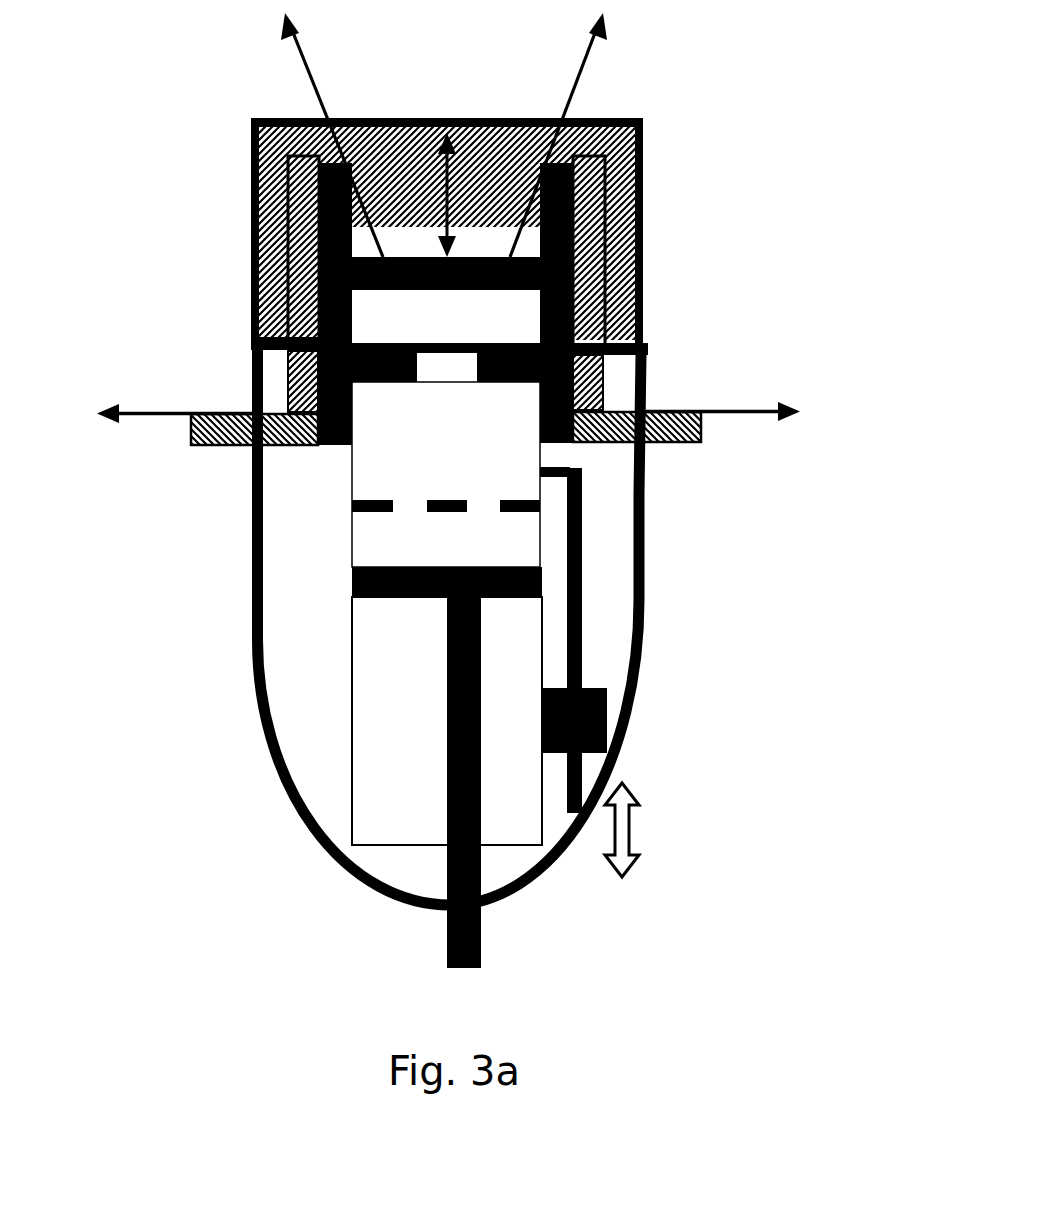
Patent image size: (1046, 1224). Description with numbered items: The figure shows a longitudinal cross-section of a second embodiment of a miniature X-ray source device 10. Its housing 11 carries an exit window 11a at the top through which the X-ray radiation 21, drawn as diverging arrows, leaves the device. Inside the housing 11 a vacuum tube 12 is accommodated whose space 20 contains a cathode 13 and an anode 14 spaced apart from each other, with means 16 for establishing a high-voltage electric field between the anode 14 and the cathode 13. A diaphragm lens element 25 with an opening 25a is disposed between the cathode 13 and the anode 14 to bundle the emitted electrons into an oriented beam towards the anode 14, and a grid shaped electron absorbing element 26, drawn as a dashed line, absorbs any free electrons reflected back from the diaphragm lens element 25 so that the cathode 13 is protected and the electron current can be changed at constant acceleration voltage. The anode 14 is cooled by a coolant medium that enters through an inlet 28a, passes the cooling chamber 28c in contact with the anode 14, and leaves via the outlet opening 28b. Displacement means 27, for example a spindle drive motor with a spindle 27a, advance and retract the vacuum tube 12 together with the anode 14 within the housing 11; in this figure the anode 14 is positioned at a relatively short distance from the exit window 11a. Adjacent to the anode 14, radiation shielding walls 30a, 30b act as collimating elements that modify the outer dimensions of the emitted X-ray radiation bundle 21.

The miniature X-ray source device 10 is at (222, 560).
The housing 11 is at (257, 687).
The exit window 11a is at (470, 115).
The vacuum tube 12 is at (350, 627).
The cathode 13 is at (545, 590).
The anode 14 is at (575, 292).
The means for establishing a high-voltage electric field 16 is at (447, 938).
The space 20 is at (468, 457).
The X-ray radiation 21 is at (588, 81).
The diaphragm lens element 25 is at (253, 363).
The opening 25a is at (450, 373).
The grid shaped electron absorbing element 26 is at (545, 507).
The displacement means 27 is at (603, 733).
The actuating rod 27a is at (580, 657).
The inlet 28a is at (223, 427).
The outlet opening 28b is at (703, 440).
The cooling chamber 28c is at (397, 173).
The radiation shielding wall 30a is at (252, 232).
The radiation shielding wall 30b is at (575, 243).